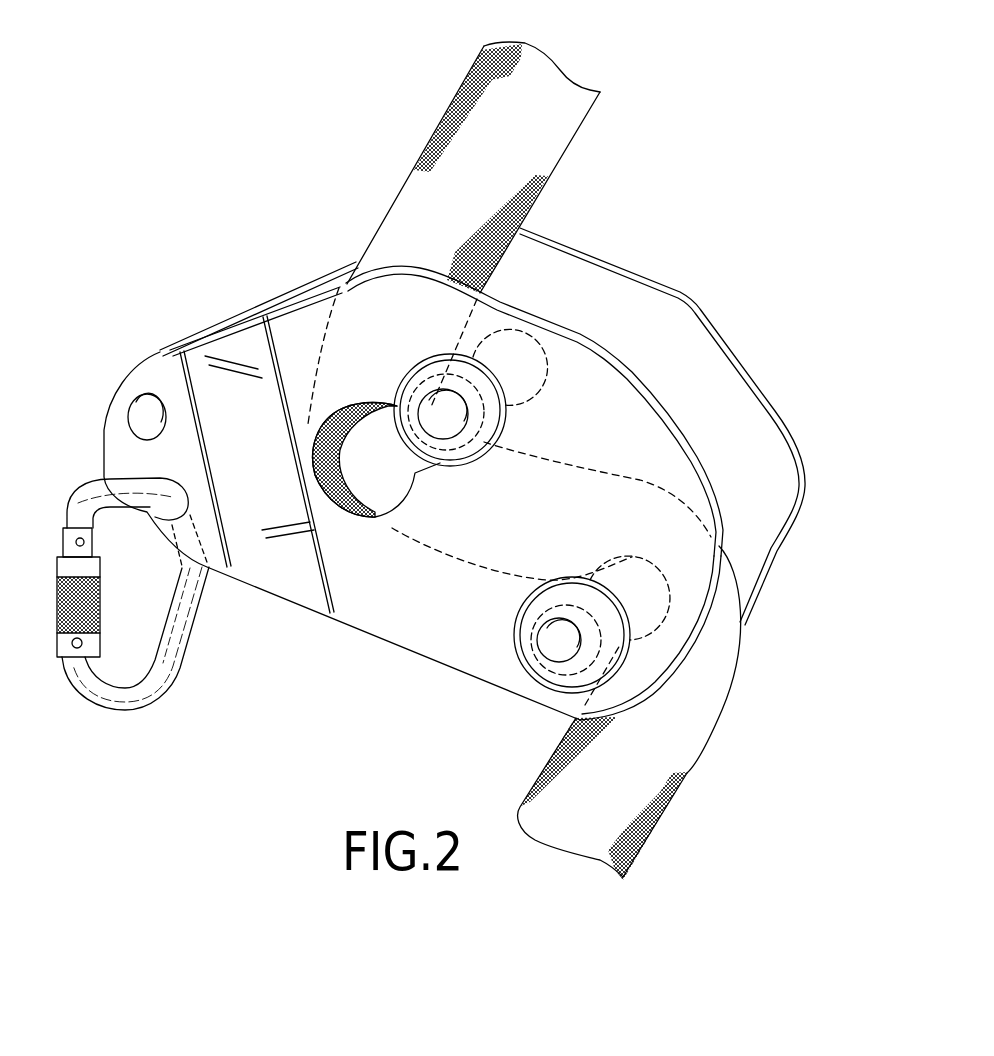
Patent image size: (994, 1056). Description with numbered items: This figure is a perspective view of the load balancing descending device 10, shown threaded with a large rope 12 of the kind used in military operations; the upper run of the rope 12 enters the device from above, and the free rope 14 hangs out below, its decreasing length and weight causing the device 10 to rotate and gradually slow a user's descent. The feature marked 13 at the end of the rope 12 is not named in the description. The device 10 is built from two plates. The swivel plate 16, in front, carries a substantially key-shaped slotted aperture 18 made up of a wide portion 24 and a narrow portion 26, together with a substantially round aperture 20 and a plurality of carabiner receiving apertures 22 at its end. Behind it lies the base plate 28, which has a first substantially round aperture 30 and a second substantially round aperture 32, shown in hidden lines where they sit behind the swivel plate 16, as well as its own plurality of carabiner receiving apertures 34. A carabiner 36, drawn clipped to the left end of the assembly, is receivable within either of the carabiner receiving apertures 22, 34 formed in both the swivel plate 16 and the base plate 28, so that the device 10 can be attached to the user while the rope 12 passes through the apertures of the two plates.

The load balancing descending device 10 is at (372, 150).
The rope 12 is at (582, 148).
The strap end 13 is at (583, 101).
The free rope 14 is at (687, 772).
The swivel plate 16 is at (157, 367).
The key-shaped slotted aperture 18 is at (382, 527).
The round aperture 20 is at (535, 630).
The carabiner receiving apertures 22 is at (150, 477).
The wide portion 24 is at (326, 407).
The narrow portion 26 is at (508, 404).
The base plate 28 is at (680, 290).
The first round aperture 30 is at (549, 357).
The second round aperture 32 is at (743, 657).
The carabiner receiving apertures 34 is at (208, 497).
The carabiner 36 is at (110, 715).